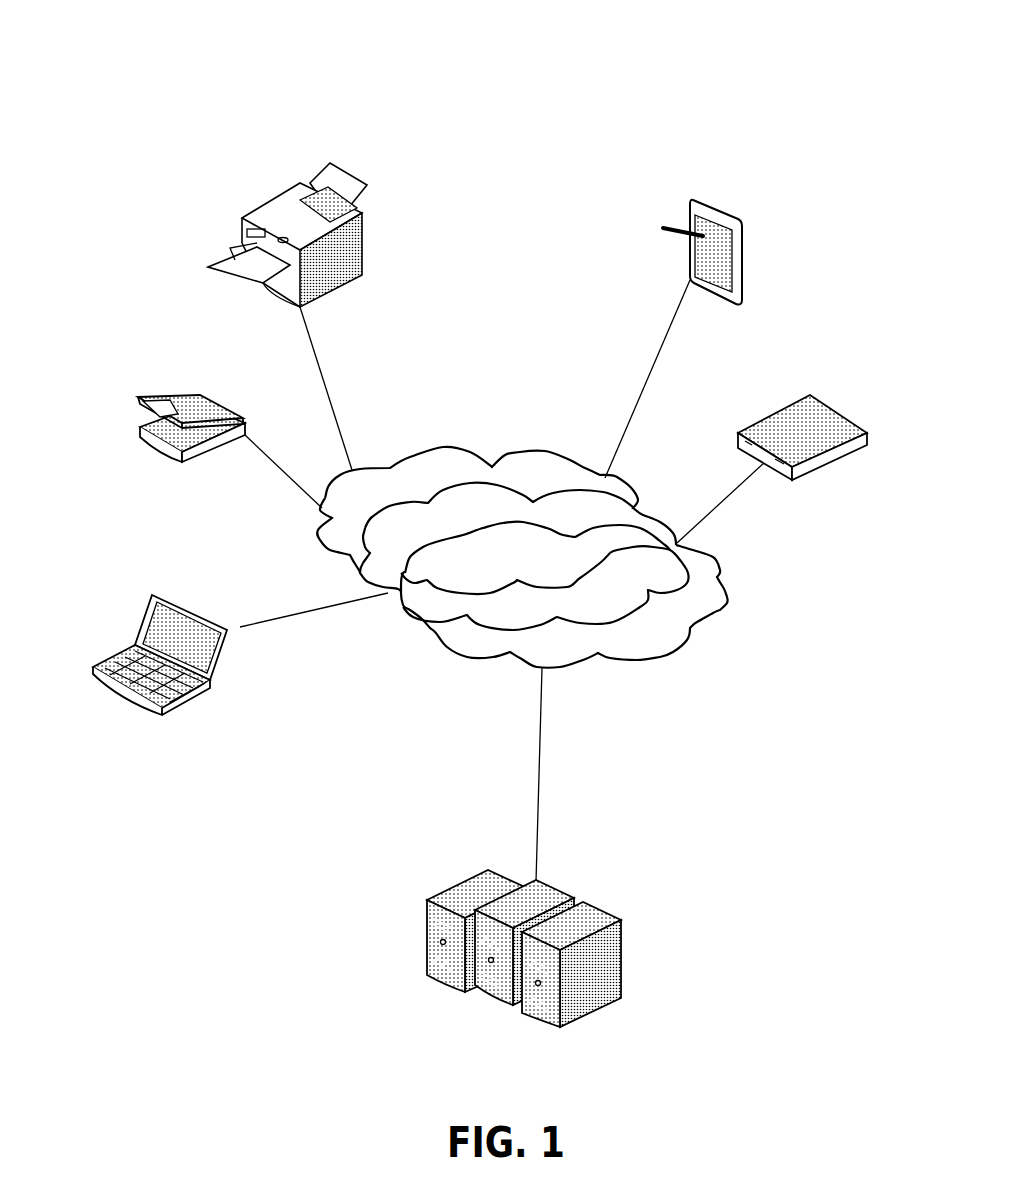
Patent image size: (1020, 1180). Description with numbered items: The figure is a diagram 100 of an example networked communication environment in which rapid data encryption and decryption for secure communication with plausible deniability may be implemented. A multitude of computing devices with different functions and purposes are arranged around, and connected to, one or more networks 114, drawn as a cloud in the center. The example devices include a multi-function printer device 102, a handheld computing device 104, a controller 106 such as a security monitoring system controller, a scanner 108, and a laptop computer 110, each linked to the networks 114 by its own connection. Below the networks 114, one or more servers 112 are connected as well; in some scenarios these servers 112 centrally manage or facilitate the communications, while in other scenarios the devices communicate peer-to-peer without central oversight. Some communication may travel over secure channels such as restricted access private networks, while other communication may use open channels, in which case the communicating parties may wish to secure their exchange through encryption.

The diagram 100 is at (722, 62).
The multi-function printer device 102 is at (263, 175).
The handheld computing device 104 is at (752, 248).
The controller 106 is at (777, 402).
The scanner 108 is at (197, 378).
The laptop computer 110 is at (172, 580).
The servers 112 is at (642, 917).
The networks 114 is at (480, 428).